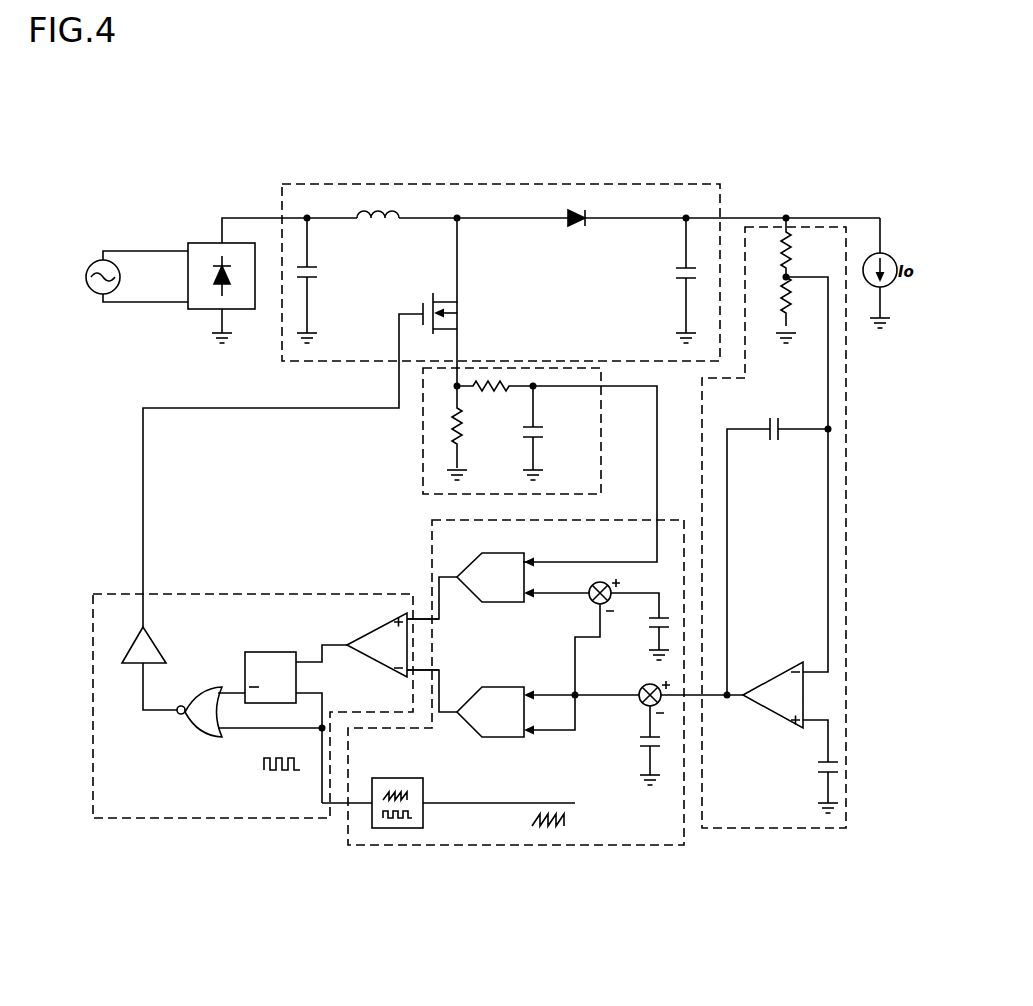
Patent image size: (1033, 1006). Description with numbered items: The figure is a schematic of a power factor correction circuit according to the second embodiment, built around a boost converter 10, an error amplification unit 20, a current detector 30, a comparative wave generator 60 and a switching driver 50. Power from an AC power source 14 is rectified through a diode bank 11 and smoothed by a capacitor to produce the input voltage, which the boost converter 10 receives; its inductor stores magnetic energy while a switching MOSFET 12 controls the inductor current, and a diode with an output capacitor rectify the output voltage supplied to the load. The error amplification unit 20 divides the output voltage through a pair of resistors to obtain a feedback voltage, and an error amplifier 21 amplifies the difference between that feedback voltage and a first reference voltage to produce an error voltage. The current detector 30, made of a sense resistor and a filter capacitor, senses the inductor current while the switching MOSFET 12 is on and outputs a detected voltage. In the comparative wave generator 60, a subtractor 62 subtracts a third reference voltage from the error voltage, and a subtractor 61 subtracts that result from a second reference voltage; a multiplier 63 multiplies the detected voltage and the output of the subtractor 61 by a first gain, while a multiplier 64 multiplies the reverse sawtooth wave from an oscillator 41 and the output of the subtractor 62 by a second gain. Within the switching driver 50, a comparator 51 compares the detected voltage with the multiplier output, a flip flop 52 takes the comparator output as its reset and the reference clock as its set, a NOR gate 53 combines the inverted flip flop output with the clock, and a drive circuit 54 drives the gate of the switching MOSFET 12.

The boost converter 10 is at (552, 184).
The diode bank 11 is at (228, 282).
The switching MOSFET 12 is at (441, 312).
The AC power source 14 is at (94, 295).
The error amplification unit 20 is at (765, 829).
The error amplifier 21 is at (765, 710).
The current detector 30 is at (423, 460).
The oscillator 41 is at (398, 829).
The switching driver 50 is at (210, 819).
The comparator 51 is at (380, 629).
The flip flop 52 is at (264, 652).
The NOR gate 53 is at (190, 735).
The drive circuit 54 is at (124, 648).
The comparative wave generator 60 is at (540, 846).
The subtractor 61 is at (598, 581).
The subtractor 62 is at (640, 687).
The multiplier 63 is at (500, 604).
The multiplier 64 is at (500, 739).